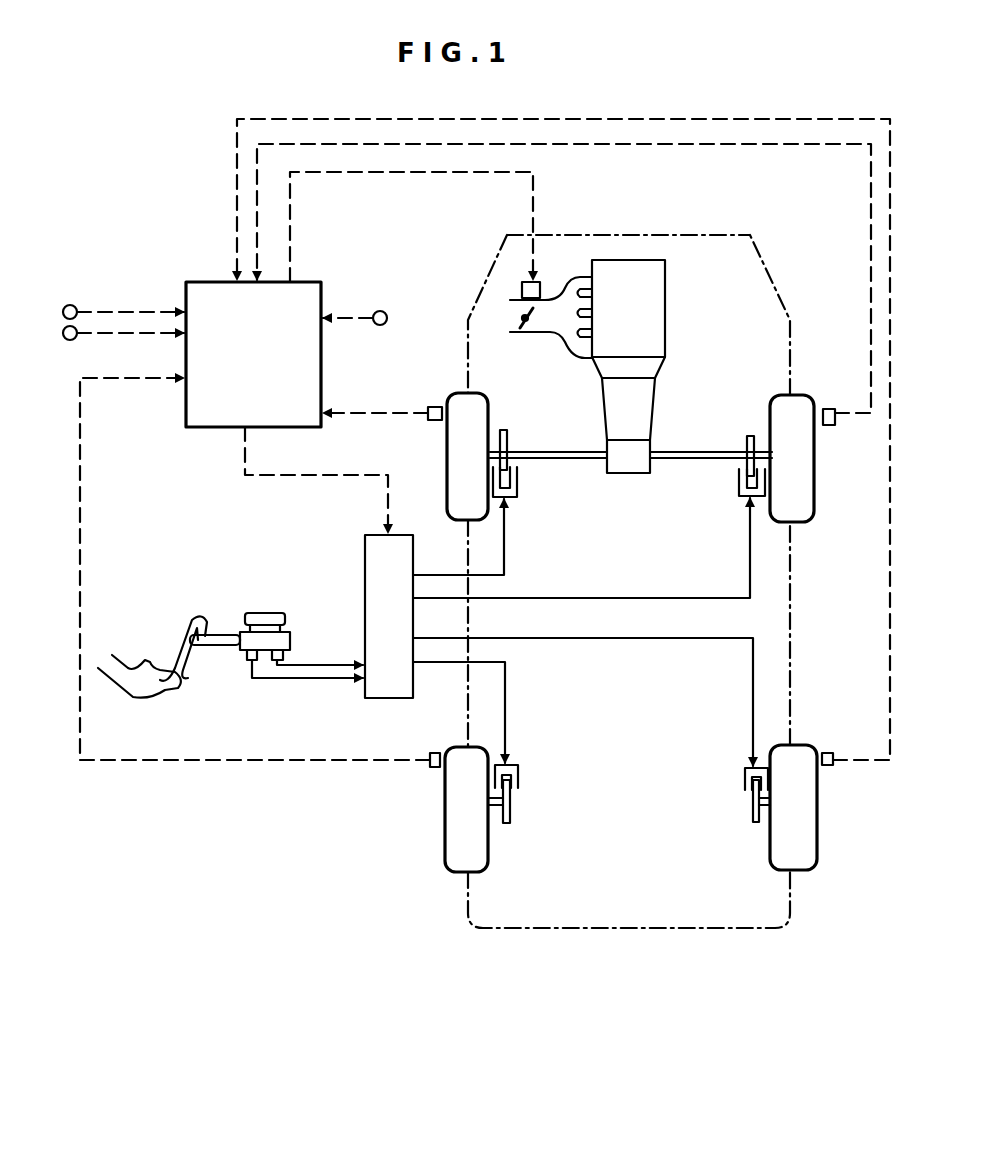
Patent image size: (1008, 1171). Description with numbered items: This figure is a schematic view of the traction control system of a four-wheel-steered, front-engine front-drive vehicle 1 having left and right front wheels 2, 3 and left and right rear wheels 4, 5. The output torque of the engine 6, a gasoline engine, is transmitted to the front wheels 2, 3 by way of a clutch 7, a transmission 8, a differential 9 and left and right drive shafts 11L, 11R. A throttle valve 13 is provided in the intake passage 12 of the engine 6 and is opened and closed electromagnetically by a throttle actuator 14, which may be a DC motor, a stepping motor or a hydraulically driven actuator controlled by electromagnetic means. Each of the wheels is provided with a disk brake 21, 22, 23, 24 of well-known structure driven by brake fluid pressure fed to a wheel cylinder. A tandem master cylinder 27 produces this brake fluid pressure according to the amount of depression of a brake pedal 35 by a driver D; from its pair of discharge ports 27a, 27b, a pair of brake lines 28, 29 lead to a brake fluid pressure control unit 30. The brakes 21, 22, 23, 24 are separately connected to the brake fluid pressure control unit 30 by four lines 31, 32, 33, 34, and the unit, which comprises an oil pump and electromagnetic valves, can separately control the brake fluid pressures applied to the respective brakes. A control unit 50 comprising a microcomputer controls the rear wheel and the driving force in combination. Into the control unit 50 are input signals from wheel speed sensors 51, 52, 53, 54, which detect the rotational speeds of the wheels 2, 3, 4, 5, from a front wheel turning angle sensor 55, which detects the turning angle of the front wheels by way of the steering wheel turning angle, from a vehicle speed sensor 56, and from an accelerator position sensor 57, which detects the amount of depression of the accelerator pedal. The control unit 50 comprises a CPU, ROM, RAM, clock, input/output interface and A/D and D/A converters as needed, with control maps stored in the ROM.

The front-engine front-drive vehicle 1 is at (727, 940).
The left front wheel 2 is at (447, 458).
The right front wheel 3 is at (812, 510).
The left rear wheel 4 is at (450, 840).
The right rear wheel 5 is at (808, 853).
The engine 6 is at (655, 338).
The clutch 7 is at (650, 368).
The transmission 8 is at (638, 418).
The differential 9 is at (640, 475).
The left drive shaft 11L is at (560, 462).
The right drive shaft 11R is at (697, 462).
The intake passage 12 is at (550, 322).
The throttle valve 13 is at (522, 330).
The throttle actuator 14 is at (540, 288).
The disk brake 21 is at (518, 437).
The disk brake 22 is at (745, 435).
The disk brake 23 is at (525, 795).
The disk brake 24 is at (742, 798).
The tandem master cylinder 27 is at (284, 637).
The discharge port 27a is at (283, 658).
The discharge port 27b is at (245, 660).
The brake line 28 is at (330, 660).
The brake line 29 is at (316, 683).
The brake fluid pressure control unit 30 is at (390, 700).
The line 31 is at (512, 557).
The line 32 is at (635, 596).
The line 33 is at (515, 720).
The line 34 is at (693, 642).
The brake pedal 35 is at (183, 685).
The driver D is at (124, 658).
The control unit 50 is at (320, 282).
The wheel speed sensor 51 is at (435, 405).
The wheel speed sensor 52 is at (830, 405).
The wheel speed sensor 53 is at (430, 765).
The wheel speed sensor 54 is at (832, 765).
The front wheel turning angle sensor 55 is at (72, 305).
The vehicle speed sensor 56 is at (65, 338).
The accelerator position sensor 57 is at (385, 311).